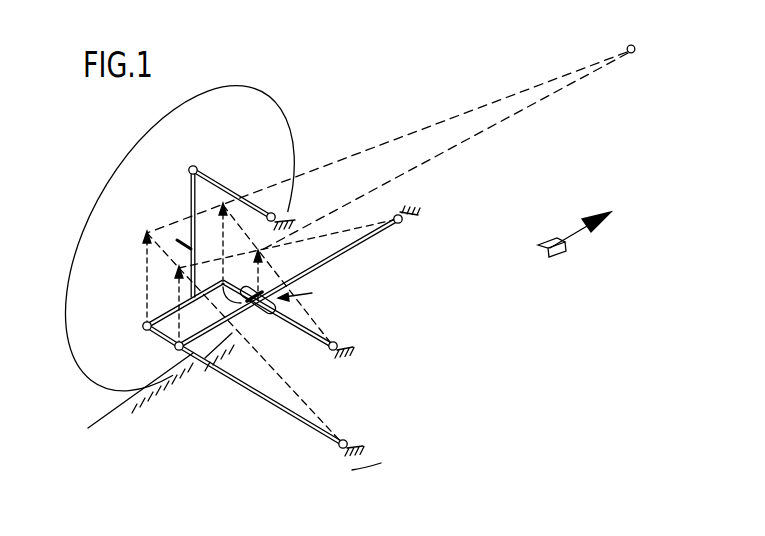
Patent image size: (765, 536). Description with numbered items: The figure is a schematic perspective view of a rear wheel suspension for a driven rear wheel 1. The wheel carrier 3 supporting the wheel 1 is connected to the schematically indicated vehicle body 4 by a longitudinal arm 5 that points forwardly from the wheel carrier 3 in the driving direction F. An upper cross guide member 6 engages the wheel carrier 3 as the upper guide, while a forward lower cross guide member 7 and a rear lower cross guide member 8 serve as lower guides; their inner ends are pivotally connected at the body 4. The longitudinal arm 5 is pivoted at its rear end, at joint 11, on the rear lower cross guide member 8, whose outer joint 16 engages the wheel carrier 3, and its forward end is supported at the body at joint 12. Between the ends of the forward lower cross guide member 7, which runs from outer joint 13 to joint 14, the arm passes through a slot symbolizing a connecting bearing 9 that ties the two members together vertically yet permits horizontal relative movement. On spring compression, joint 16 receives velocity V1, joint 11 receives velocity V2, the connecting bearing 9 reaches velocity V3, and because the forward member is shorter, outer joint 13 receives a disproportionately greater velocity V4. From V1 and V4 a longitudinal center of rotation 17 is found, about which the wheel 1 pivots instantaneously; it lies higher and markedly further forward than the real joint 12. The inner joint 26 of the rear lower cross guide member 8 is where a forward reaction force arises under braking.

The rear wheel 1 is at (95, 187).
The wheel carrier 3 is at (190, 210).
The vehicle body 4 is at (285, 219).
The longitudinal arm 5 is at (360, 247).
The upper cross guide member 6 is at (223, 187).
The forward lower cross guide member 7 is at (312, 325).
The rear lower cross guide member 8 is at (237, 385).
The connecting bearing 9 is at (303, 290).
The joint 11 is at (175, 348).
The joint 12 is at (402, 224).
The outer joint 13 is at (259, 314).
The joint 14 is at (339, 345).
The outer joint 16 is at (143, 324).
The longitudinal center of rotation 17 is at (630, 54).
The inner joint 26 is at (338, 444).
The velocity V1 is at (136, 278).
The velocity V2 is at (169, 306).
The velocity V3 is at (258, 278).
The velocity V4 is at (212, 242).
The driving direction F is at (573, 233).